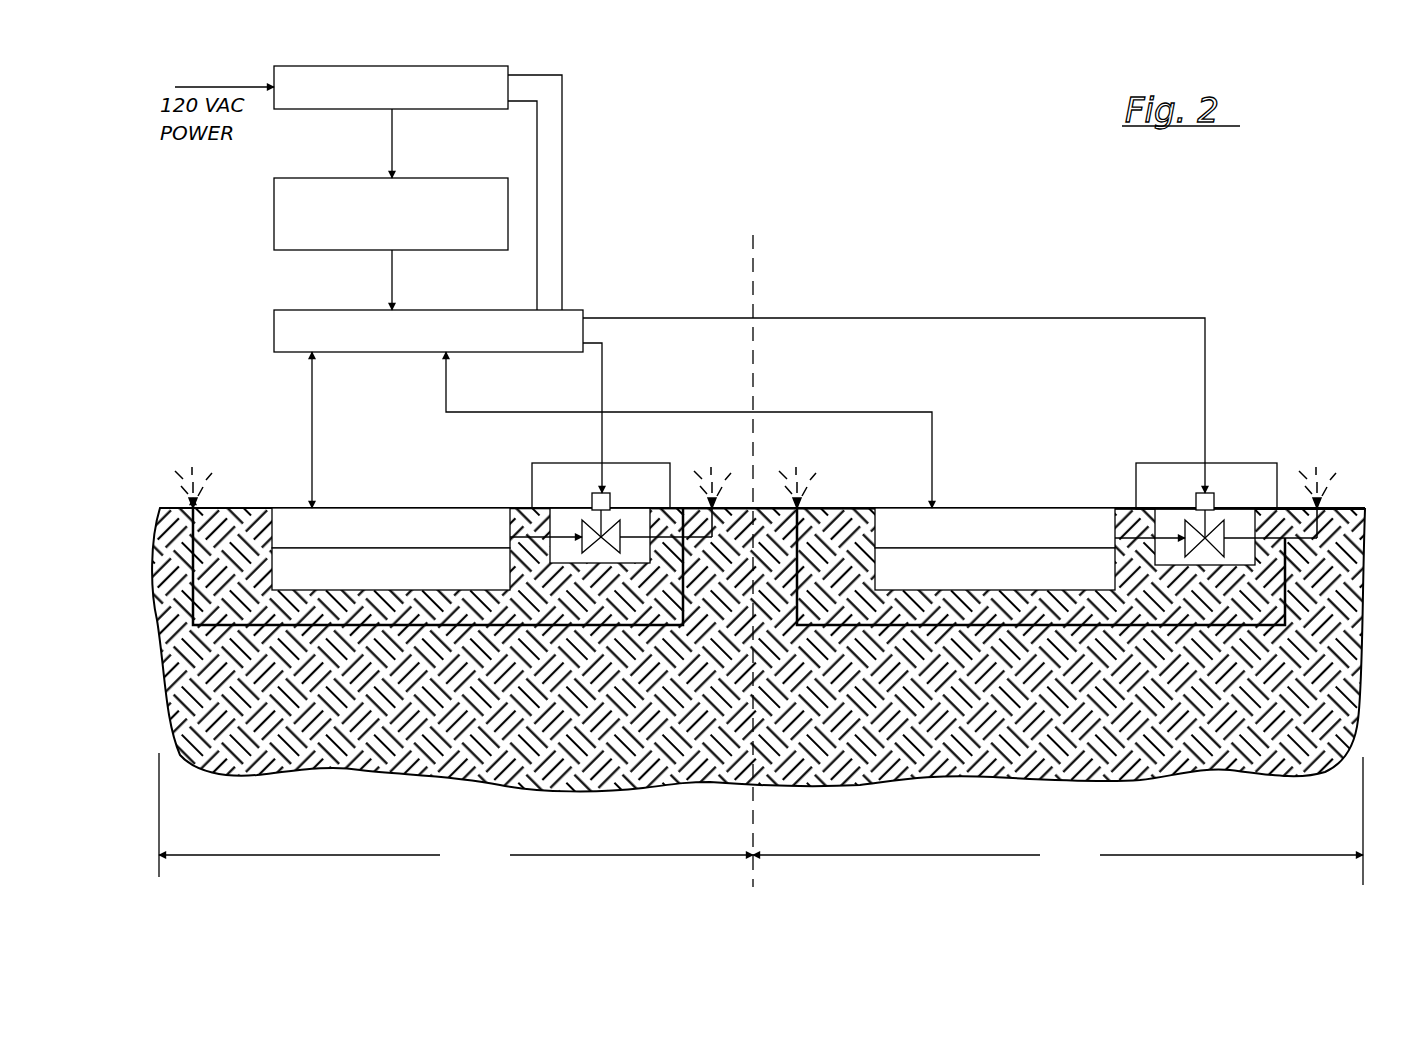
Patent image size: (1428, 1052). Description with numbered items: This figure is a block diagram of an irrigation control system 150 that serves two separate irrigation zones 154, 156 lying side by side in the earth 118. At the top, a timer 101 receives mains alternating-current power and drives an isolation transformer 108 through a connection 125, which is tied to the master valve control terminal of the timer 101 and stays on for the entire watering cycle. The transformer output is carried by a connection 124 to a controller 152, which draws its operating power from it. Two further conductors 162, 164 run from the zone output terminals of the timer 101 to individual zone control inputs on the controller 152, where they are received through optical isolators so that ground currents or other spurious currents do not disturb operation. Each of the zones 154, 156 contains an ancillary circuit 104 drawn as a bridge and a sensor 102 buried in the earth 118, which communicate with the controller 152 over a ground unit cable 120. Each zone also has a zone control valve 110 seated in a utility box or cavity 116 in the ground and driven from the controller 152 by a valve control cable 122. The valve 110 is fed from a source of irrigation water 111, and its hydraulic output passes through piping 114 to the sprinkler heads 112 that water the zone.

The timer 101 is at (450, 66).
The isolation transformer 108 is at (272, 217).
The controller 152 is at (272, 331).
The connection 125 is at (388, 147).
The connection 124 is at (388, 283).
The conductor 164 is at (562, 133).
The conductor 162 is at (562, 230).
The irrigation control system 150 is at (664, 85).
The valve control cable 122 is at (602, 358).
The ground unit cable 120 is at (322, 424).
The sprinkler head 112 is at (205, 505).
The piping 114 is at (700, 580).
The ancillary circuit 104 is at (327, 535).
The sensor 102 is at (460, 562).
The source of irrigation water 111 is at (560, 536).
The zone control valve 110 is at (622, 530).
The utility box or cavity 116 is at (600, 563).
The earth 118 is at (458, 773).
The irrigation zone 154 is at (456, 815).
The irrigation zone 156 is at (1058, 821).